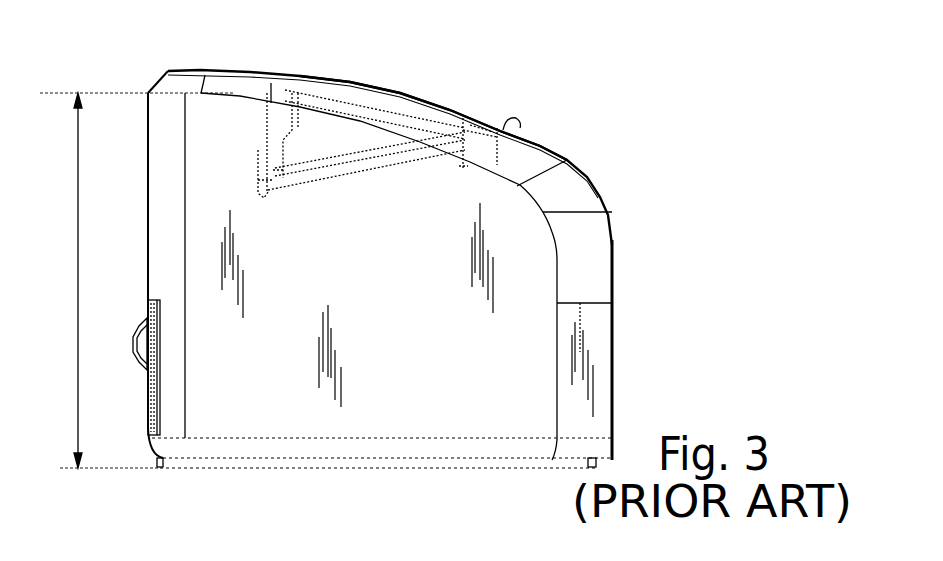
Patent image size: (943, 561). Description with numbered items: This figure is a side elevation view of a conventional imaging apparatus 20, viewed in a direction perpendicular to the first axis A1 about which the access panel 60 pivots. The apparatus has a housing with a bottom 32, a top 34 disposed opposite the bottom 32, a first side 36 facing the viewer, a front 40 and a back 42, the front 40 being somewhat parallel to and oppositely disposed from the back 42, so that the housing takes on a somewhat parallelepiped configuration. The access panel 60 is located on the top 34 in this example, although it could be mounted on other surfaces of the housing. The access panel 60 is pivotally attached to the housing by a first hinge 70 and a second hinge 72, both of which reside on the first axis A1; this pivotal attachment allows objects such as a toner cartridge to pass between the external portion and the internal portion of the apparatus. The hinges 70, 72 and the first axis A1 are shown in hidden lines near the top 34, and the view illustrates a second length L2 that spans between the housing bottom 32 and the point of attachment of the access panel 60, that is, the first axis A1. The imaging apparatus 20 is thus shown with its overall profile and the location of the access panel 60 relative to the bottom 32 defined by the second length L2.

The imaging apparatus 20 is at (480, 62).
The bottom 32 is at (447, 470).
The top 34 is at (540, 148).
The first side 36 is at (400, 297).
The front 40 is at (614, 322).
The back 42 is at (147, 207).
The access panel 60 is at (330, 165).
The first hinge 70 is at (272, 93).
The second hinge 72 is at (282, 93).
The first axis A1 is at (290, 93).
The second length L2 is at (77, 226).